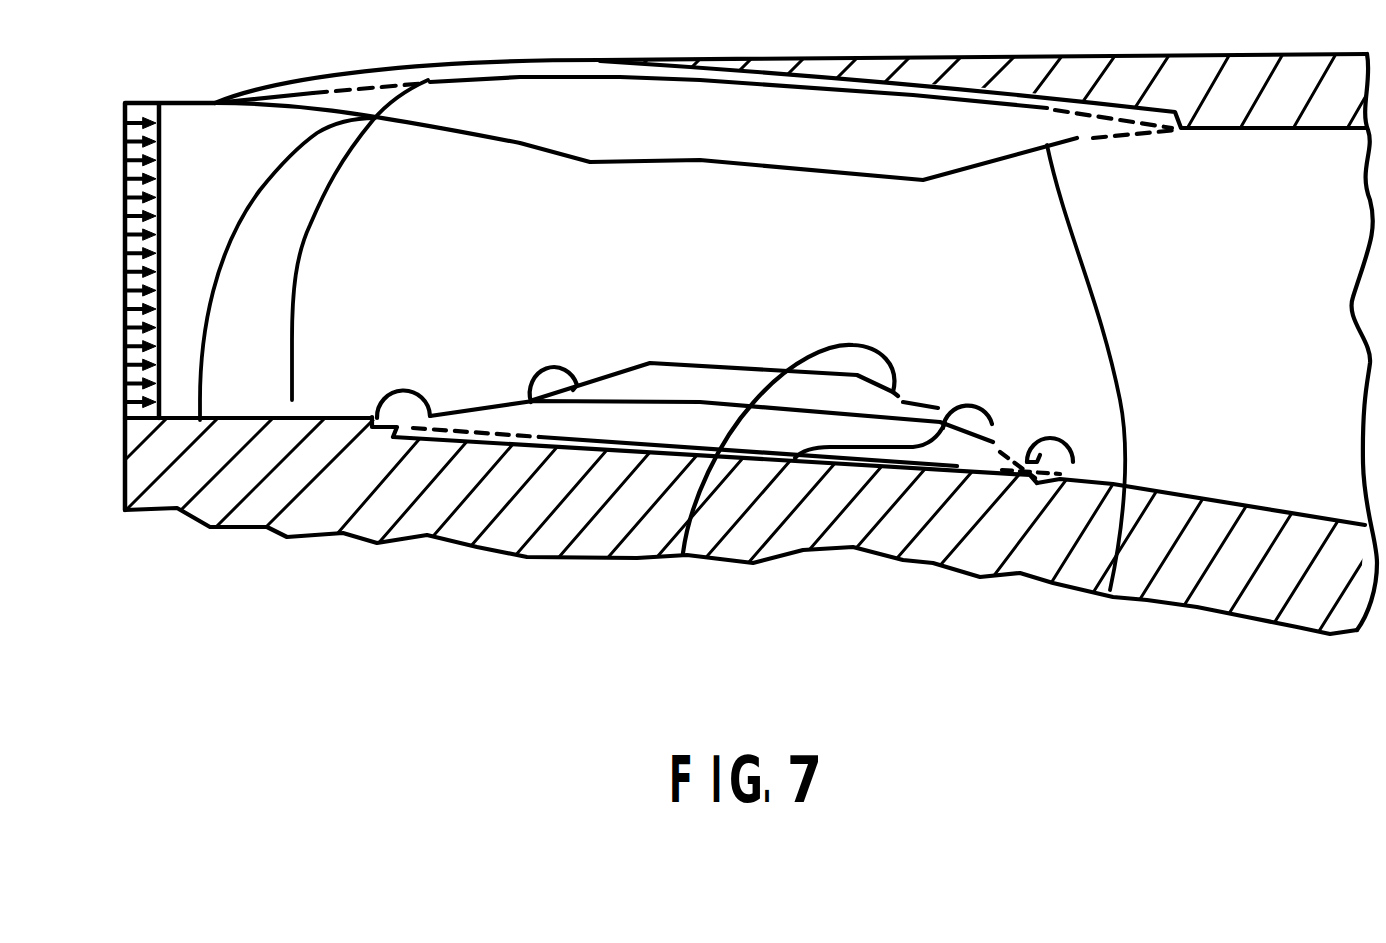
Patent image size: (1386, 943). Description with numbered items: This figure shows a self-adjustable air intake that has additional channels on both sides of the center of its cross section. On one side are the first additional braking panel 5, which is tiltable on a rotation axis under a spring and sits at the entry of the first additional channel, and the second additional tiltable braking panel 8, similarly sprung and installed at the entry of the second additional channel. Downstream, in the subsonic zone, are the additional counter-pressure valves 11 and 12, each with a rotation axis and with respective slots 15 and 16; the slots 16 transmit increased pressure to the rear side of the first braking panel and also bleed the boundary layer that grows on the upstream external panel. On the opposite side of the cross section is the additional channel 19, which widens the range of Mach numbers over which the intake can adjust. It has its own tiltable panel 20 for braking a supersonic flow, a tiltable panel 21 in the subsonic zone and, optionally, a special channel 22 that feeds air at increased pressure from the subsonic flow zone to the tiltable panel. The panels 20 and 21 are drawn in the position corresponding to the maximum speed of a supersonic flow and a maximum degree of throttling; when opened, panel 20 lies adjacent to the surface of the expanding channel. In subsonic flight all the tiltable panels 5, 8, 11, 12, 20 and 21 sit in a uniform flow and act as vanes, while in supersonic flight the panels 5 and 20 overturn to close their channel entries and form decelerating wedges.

The first additional braking surface (panel) 5 is at (497, 112).
The second additional tiltable braking surface (panel) 8 is at (533, 402).
The additional counter-pressure valve 11 is at (795, 458).
The additional counter-pressure valve 12 is at (683, 553).
The slot 15 is at (992, 424).
The slot 16 is at (1073, 462).
The additional channel 19 is at (375, 418).
The tiltable panel 20 is at (200, 420).
The tiltable panel 21 is at (1110, 590).
The special channel 22 is at (292, 400).